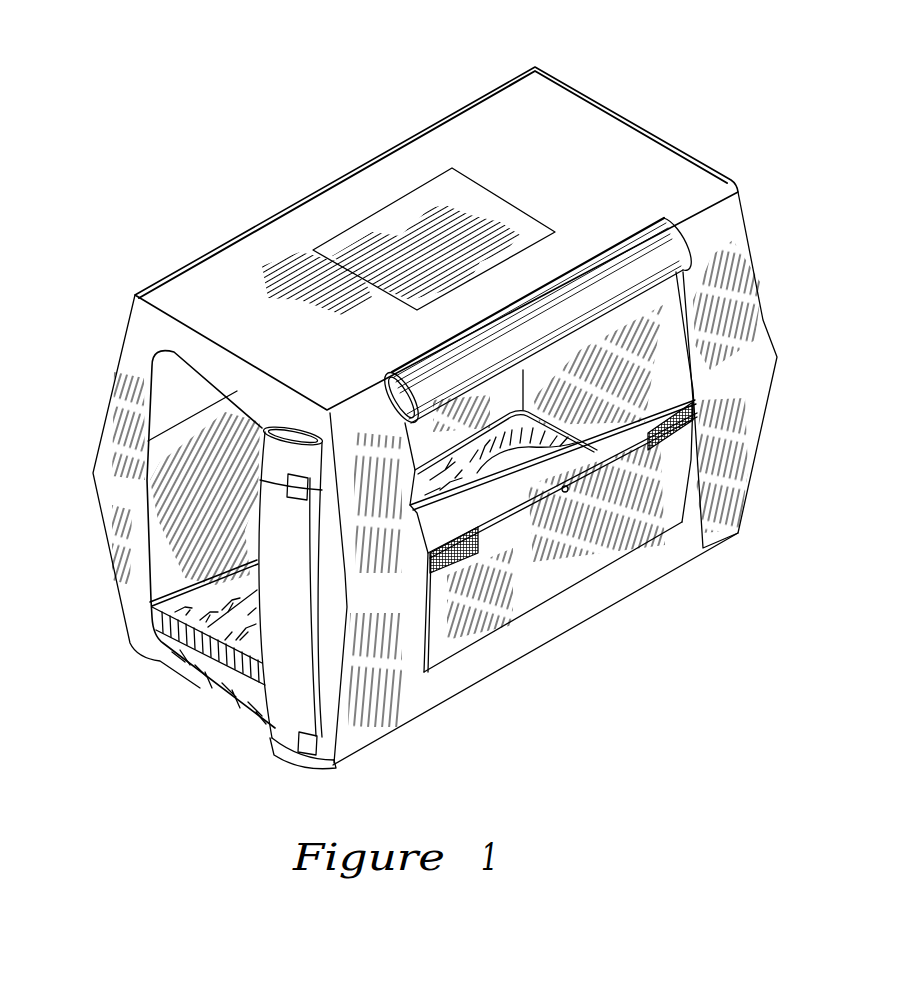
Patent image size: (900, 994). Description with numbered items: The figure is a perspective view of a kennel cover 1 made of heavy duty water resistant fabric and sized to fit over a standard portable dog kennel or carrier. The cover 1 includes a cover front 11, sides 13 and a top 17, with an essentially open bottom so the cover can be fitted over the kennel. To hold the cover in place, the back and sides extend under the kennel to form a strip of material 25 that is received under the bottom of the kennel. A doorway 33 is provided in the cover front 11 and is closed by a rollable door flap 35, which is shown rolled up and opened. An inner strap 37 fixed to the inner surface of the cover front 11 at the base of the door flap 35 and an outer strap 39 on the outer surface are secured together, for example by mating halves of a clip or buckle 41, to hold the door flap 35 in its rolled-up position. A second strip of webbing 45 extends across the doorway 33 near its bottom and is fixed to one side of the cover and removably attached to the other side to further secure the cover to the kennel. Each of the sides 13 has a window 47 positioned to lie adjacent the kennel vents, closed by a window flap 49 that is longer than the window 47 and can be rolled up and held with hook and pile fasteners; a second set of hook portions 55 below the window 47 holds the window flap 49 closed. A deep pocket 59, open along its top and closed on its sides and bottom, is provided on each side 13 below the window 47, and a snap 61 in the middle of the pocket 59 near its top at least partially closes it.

The kennel cover 1 is at (733, 139).
The cover front 11 is at (118, 547).
The sides 13 is at (437, 676).
The top 17 is at (180, 304).
The strip of material 25 is at (480, 468).
The doorway 33 is at (160, 660).
The door flap 35 is at (310, 778).
The inner strap 37 is at (301, 429).
The outer strap 39 is at (328, 436).
The clip or buckle 41 is at (297, 478).
The second strip of webbing 45 is at (220, 700).
The window 47 is at (677, 327).
The window flap 49 is at (667, 230).
The second set of hook portions 55 is at (465, 557).
The pocket 59 is at (637, 537).
The snap 61 is at (567, 492).